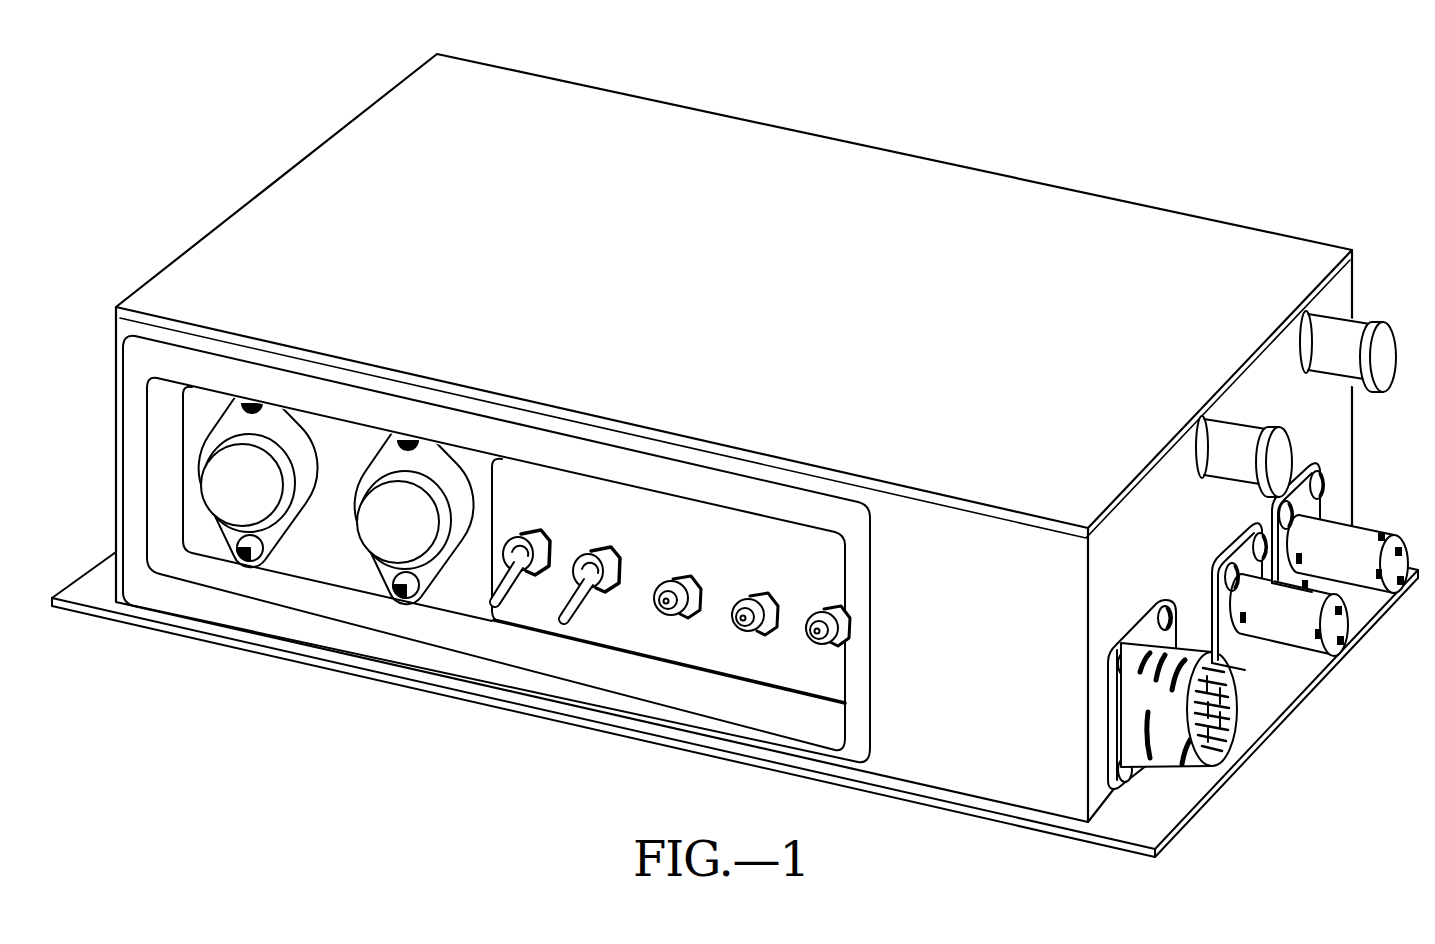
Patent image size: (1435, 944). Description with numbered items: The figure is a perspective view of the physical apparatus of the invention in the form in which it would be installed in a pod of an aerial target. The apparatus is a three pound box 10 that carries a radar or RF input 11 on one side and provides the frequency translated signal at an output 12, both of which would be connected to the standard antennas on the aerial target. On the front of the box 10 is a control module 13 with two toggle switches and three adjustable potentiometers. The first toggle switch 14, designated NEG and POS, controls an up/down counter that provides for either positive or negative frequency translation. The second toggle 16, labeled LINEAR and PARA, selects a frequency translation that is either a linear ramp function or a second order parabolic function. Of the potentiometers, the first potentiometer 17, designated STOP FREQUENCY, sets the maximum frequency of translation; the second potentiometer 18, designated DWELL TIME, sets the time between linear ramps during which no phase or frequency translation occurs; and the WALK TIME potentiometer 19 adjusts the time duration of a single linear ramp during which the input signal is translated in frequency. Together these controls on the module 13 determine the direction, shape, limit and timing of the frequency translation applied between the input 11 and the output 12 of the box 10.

The box 10 is at (729, 303).
The radar or RF input 11 is at (1238, 470).
The output 12 is at (1340, 362).
The control module 13 is at (620, 512).
The first toggle switch 14 is at (524, 540).
The toggle 16 is at (594, 555).
The first potentiometer 17 is at (670, 580).
The second potentiometer 18 is at (749, 596).
The WALK TIME potentiometer 19 is at (822, 609).